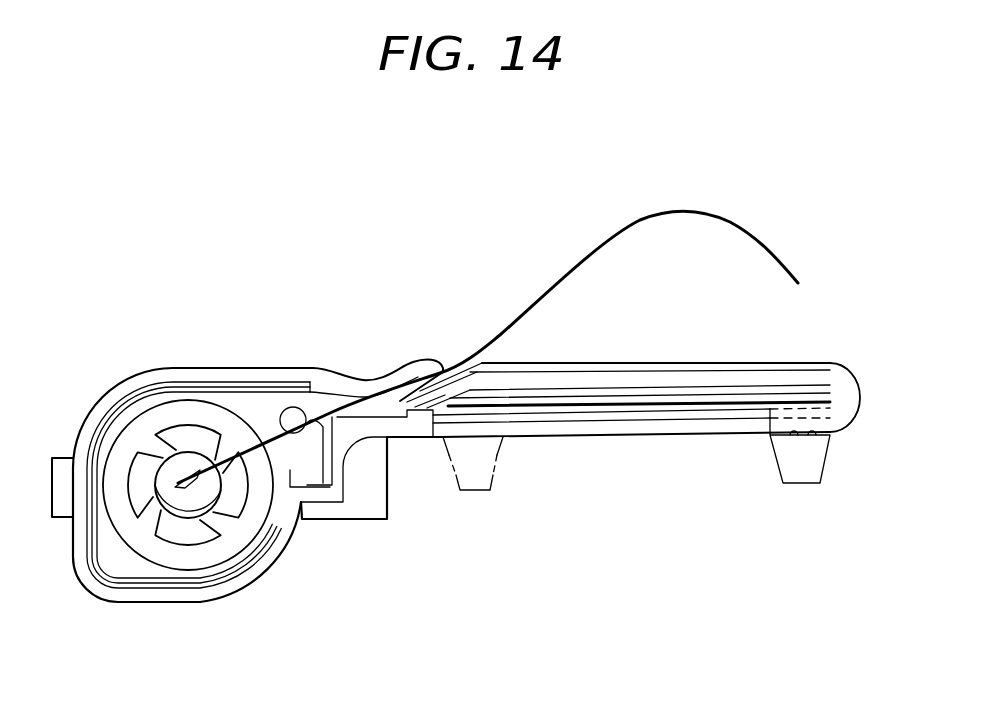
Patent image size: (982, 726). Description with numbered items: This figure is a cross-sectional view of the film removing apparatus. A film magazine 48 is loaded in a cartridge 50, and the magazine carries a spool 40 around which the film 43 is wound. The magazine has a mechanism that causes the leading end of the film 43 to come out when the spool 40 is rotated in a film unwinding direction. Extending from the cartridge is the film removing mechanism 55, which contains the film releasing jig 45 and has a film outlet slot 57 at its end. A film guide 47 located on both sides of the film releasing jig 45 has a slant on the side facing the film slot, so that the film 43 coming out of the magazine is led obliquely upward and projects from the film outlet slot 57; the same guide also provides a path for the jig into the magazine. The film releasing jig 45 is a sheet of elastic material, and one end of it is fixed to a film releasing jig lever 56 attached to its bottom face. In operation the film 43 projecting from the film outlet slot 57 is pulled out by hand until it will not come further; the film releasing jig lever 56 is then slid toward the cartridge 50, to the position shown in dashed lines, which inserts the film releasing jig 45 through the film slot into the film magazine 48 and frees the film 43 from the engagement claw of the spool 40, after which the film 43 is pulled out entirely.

The spool 40 is at (233, 522).
The film 43 is at (787, 267).
The film releasing jig 45 is at (608, 409).
The film guide 47 is at (583, 365).
The film magazine 48 is at (242, 382).
The cartridge 50 is at (90, 585).
The film removing mechanism 55 is at (848, 395).
The film releasing jig lever 56 is at (800, 473).
The film outlet slot 57 is at (452, 362).